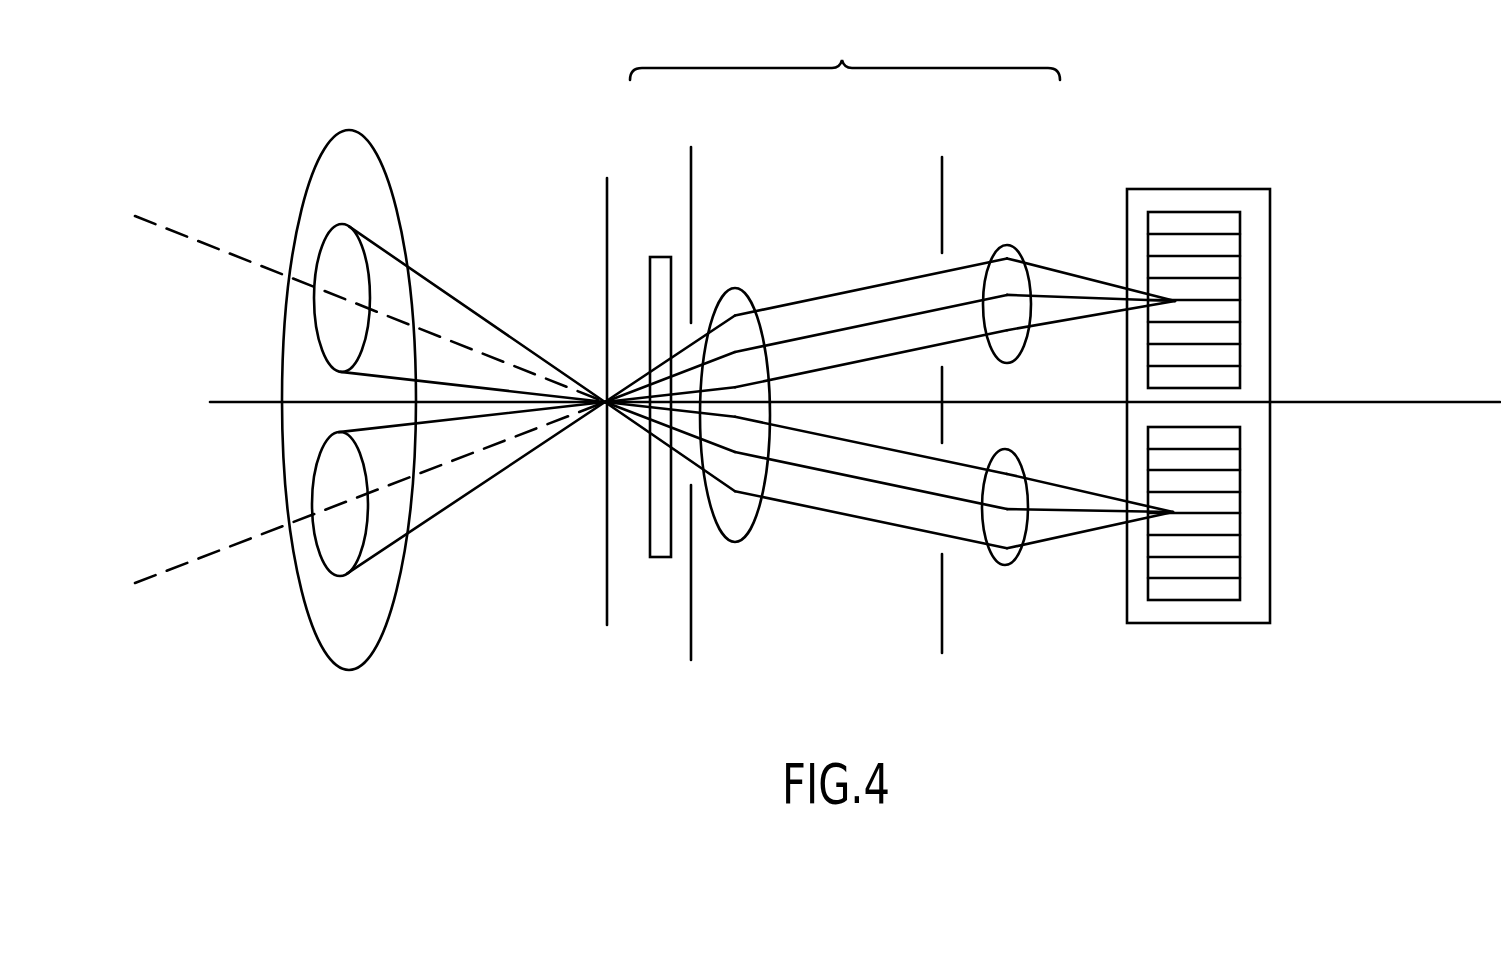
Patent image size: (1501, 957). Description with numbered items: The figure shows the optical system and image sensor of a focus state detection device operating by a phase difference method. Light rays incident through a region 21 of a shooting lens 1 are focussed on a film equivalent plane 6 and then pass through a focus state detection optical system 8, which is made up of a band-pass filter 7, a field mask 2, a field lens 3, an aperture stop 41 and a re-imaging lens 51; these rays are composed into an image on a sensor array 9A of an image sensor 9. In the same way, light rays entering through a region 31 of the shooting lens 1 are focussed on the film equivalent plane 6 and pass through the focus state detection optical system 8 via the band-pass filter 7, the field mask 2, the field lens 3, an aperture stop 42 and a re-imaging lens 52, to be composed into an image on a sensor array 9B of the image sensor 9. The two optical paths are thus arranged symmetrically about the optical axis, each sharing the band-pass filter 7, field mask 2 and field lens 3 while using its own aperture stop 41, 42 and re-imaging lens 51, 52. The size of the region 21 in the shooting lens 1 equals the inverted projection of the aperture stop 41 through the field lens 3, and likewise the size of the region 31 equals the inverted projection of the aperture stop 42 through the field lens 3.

The shooting lens 1 is at (370, 142).
The region of the shooting lens 31 is at (365, 252).
The region of the shooting lens 21 is at (363, 553).
The film equivalent plane 6 is at (605, 248).
The band-pass filter 7 is at (661, 257).
The field mask 2 is at (691, 160).
The field lens 3 is at (738, 292).
The focus state detection optical system 8 is at (845, 49).
The aperture stop 41 is at (940, 267).
The aperture stop 42 is at (935, 545).
The re-imaging lens 51 is at (1006, 246).
The re-imaging lens 52 is at (1004, 562).
The image sensor 9 is at (1215, 189).
The sensor array 9A is at (1240, 290).
The sensor array 9B is at (1240, 500).